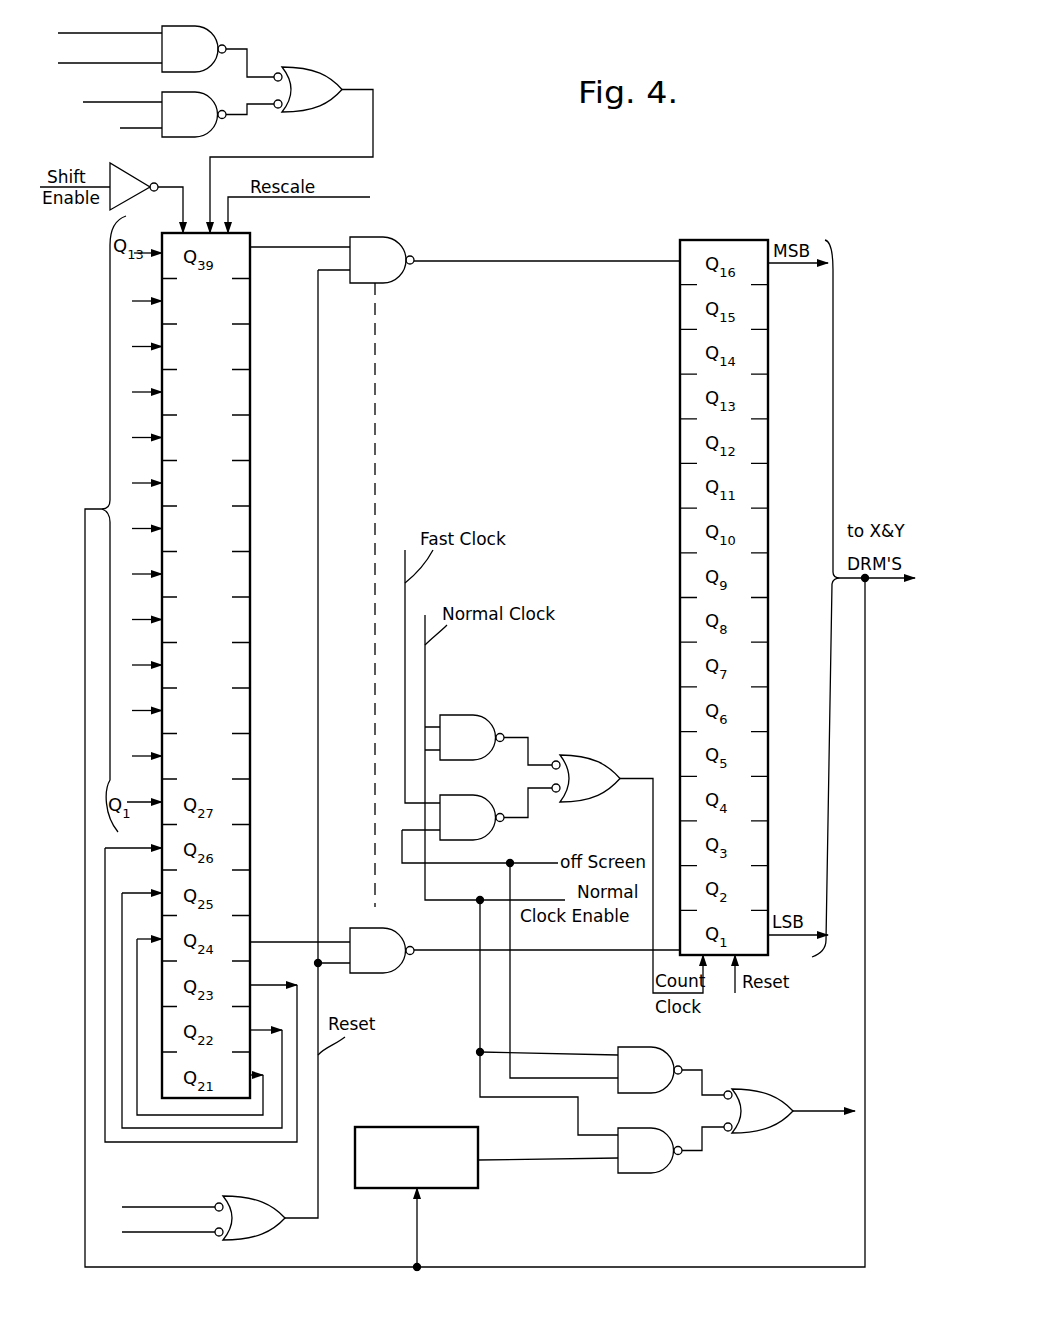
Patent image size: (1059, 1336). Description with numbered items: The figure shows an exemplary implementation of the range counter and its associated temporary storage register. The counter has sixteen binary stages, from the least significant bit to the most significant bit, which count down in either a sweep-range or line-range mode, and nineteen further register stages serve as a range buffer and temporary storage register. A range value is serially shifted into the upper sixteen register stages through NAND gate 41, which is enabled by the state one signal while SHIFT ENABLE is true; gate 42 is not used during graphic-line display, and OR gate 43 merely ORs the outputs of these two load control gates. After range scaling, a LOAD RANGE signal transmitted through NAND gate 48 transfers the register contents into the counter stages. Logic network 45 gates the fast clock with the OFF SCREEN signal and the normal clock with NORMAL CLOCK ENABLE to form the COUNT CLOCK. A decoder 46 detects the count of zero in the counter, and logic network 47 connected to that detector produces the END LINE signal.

The NAND gate 41 is at (197, 33).
The load control gate 42 is at (207, 102).
The OR gate 43 is at (322, 72).
The logic network 45 is at (550, 740).
The decoder 46 is at (386, 1125).
The logic network 47 is at (715, 1142).
The NAND gate 48 is at (258, 1203).